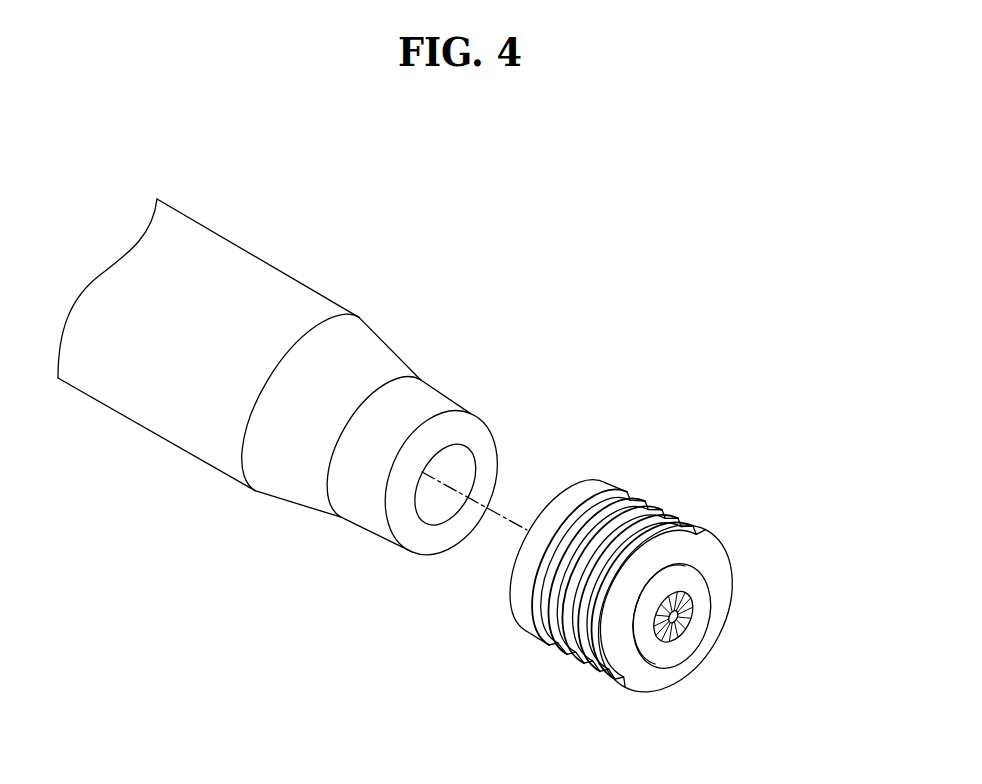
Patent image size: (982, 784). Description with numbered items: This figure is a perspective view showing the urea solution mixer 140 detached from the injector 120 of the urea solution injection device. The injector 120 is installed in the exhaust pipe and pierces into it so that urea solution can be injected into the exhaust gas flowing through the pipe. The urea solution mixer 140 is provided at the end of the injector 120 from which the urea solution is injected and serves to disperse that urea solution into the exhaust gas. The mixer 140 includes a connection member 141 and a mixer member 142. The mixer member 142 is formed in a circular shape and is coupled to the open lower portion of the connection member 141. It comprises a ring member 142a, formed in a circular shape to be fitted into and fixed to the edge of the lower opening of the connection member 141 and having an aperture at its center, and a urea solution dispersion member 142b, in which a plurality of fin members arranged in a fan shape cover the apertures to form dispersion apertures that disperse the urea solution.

The injector 120 is at (262, 261).
The urea solution mixer 140 is at (688, 561).
The connection member 141 is at (589, 484).
The mixer member 142 is at (719, 608).
The ring member 142a is at (708, 596).
The urea solution dispersion member 142b is at (688, 628).